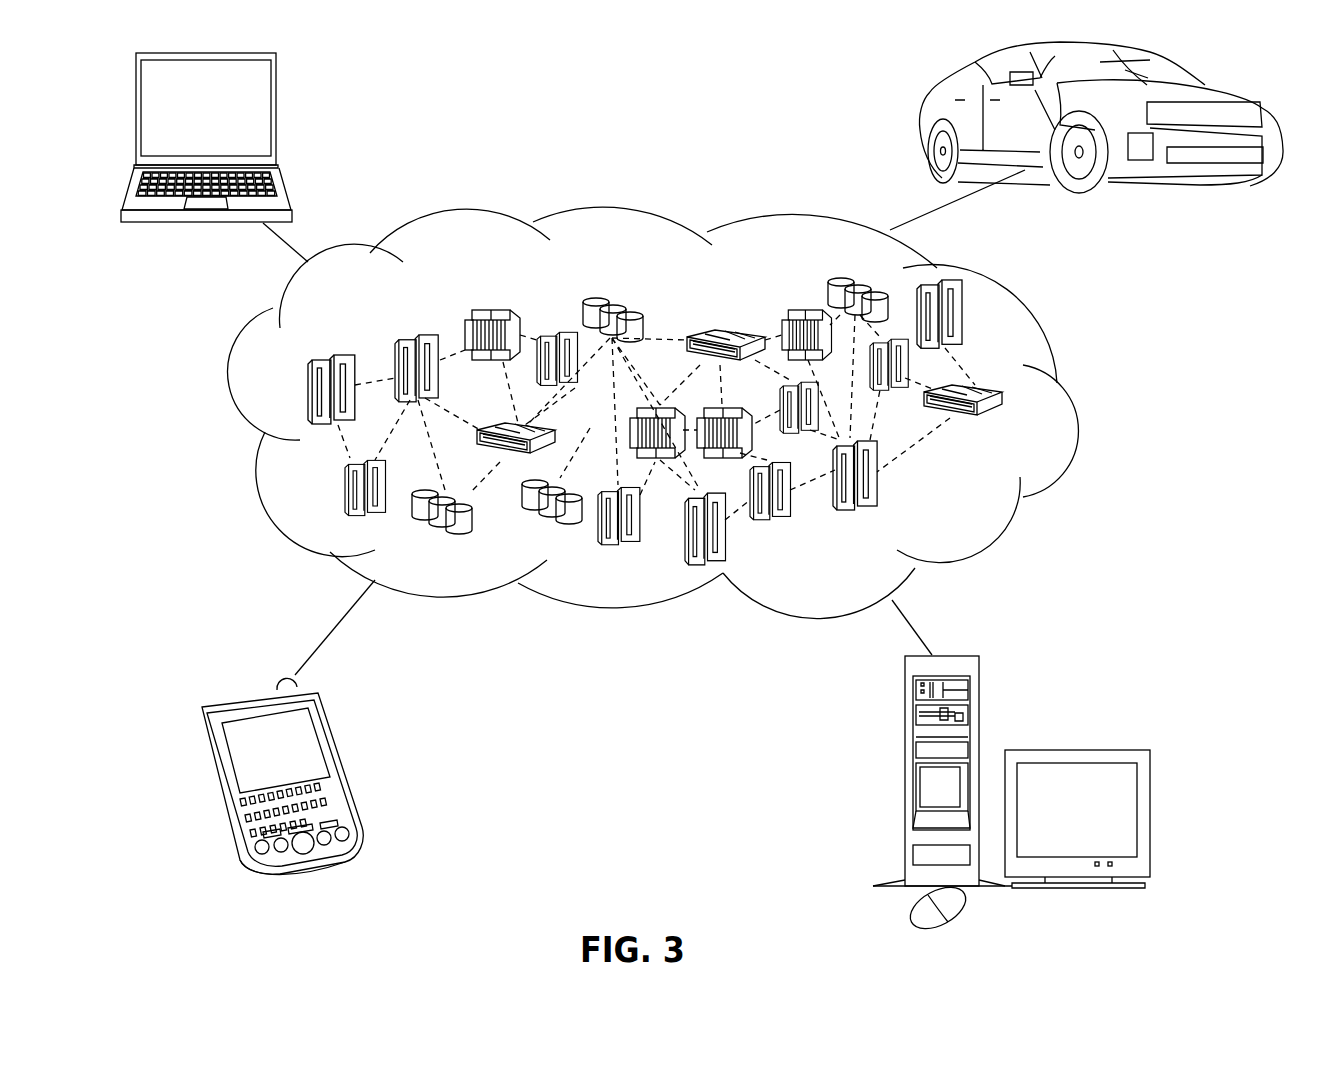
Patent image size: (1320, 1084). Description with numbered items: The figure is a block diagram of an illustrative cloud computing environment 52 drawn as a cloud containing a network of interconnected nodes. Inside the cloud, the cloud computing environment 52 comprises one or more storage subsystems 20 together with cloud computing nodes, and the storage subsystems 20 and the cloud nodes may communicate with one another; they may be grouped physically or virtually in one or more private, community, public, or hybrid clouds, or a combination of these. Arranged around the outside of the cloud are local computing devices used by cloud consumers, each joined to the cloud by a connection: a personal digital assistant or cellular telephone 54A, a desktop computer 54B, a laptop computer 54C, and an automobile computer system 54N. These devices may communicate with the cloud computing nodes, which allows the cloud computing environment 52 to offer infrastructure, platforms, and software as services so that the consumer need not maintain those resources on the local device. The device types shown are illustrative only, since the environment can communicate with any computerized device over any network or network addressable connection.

The storage subsystem 20 is at (982, 502).
The cloud computing environment 52 is at (1075, 400).
The personal digital assistant or cellular telephone 54A is at (330, 732).
The desktop computer 54B is at (904, 716).
The laptop computer 54C is at (277, 91).
The automobile computer system 54N is at (925, 104).